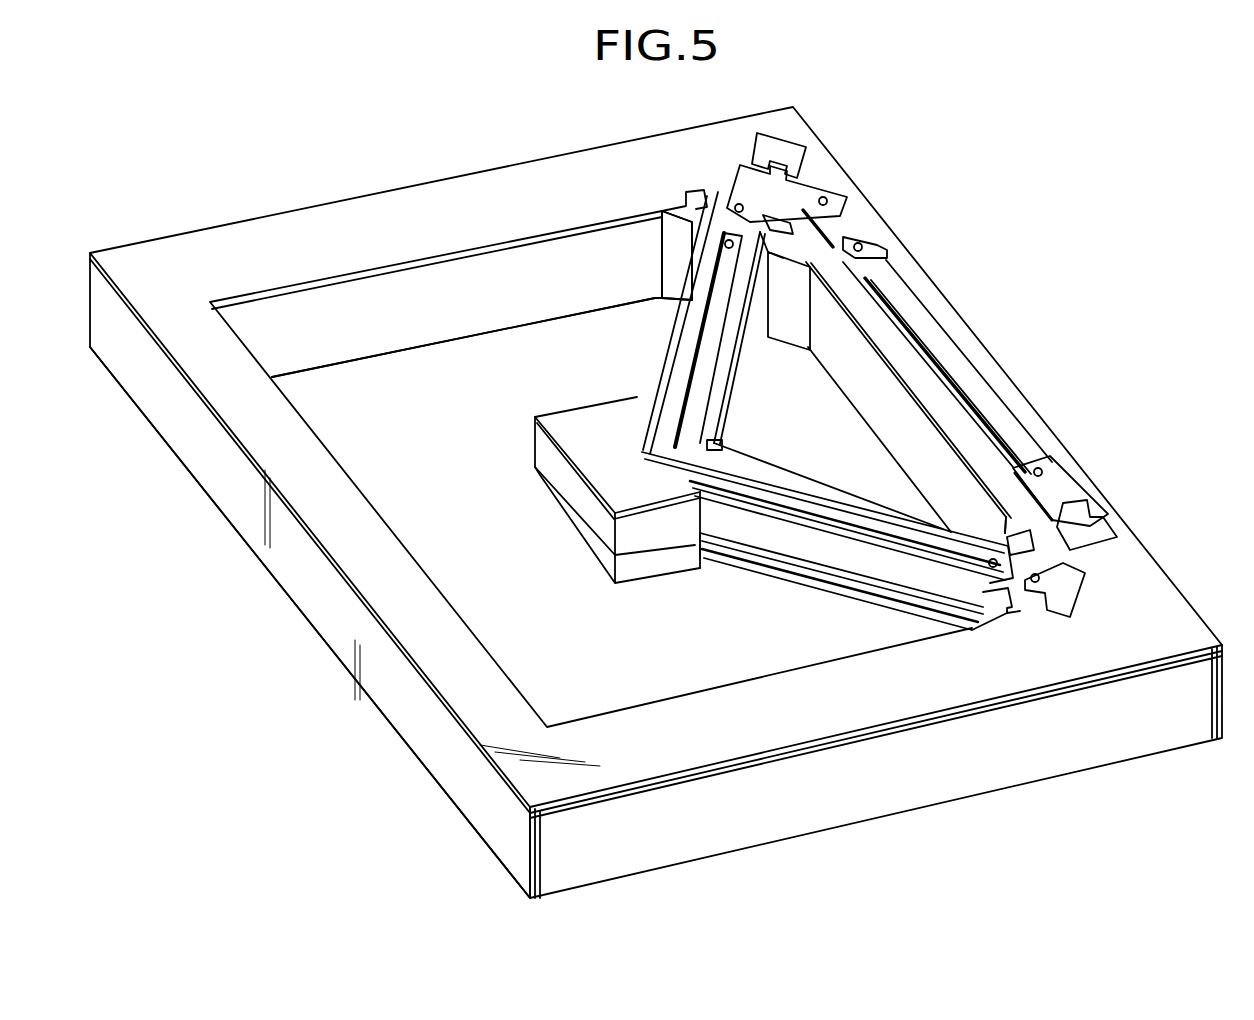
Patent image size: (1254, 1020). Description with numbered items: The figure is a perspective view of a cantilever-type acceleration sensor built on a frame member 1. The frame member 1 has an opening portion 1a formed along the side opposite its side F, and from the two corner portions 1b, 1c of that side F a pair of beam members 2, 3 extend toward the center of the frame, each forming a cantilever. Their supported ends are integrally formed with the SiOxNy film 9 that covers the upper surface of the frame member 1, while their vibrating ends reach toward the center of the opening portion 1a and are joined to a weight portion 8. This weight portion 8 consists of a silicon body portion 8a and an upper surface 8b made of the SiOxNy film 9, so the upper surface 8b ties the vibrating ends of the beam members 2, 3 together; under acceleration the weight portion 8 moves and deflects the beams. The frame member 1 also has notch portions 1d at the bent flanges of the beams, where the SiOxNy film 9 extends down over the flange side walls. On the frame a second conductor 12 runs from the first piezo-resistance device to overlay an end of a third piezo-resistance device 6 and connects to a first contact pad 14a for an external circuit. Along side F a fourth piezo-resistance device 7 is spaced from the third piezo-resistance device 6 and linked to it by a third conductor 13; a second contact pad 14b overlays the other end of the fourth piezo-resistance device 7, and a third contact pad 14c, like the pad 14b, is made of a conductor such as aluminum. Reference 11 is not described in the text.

The frame member 1 is at (883, 805).
The opening portion 1a is at (437, 574).
The corner portion 1b is at (668, 269).
The corner portion 1c is at (995, 530).
The notch portion 1d is at (688, 186).
The beam member 2 is at (660, 378).
The beam member 3 is at (782, 538).
The third piezo-resistance device 6 is at (848, 216).
The fourth piezo-resistance device 7 is at (1055, 490).
The weight portion 8 is at (566, 490).
The body portion 8a is at (540, 482).
The upper surface 8b is at (538, 430).
The SiOxNy film 9 is at (473, 526).
The bottom bar 11 is at (868, 522).
The second conductor 12 is at (742, 176).
The third conductor 13 is at (962, 377).
The first contact pad 14a is at (790, 157).
The second contact pad 14b is at (1100, 530).
The third contact pad 14c is at (1065, 593).